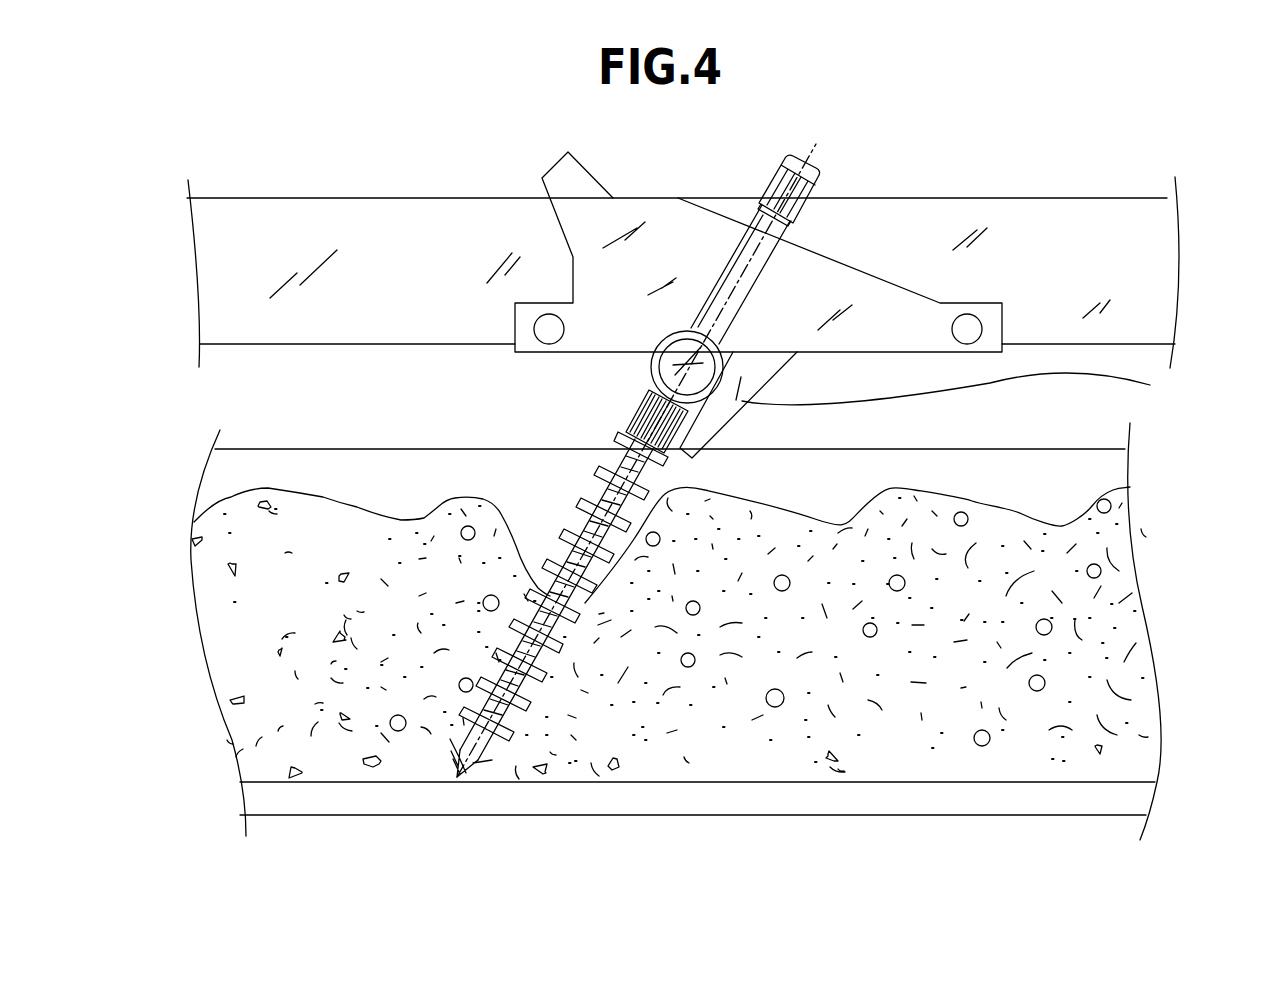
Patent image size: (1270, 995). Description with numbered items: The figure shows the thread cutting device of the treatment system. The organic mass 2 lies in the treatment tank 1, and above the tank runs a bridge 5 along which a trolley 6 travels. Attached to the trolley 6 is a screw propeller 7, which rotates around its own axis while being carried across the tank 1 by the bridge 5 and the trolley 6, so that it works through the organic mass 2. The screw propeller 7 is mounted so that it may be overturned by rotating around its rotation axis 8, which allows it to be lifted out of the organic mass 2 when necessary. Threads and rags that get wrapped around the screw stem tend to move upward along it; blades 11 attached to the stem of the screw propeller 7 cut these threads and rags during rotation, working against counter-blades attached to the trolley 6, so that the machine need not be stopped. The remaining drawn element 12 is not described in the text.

The treatment tank 1 is at (650, 798).
The organic mass 2 is at (837, 762).
The bridge 5 is at (1092, 250).
The trolley 6 is at (545, 318).
The screw propellers 7 is at (487, 757).
The rotation axis 8 is at (681, 331).
The blades 11 is at (633, 420).
The guide rail 12 is at (1150, 385).